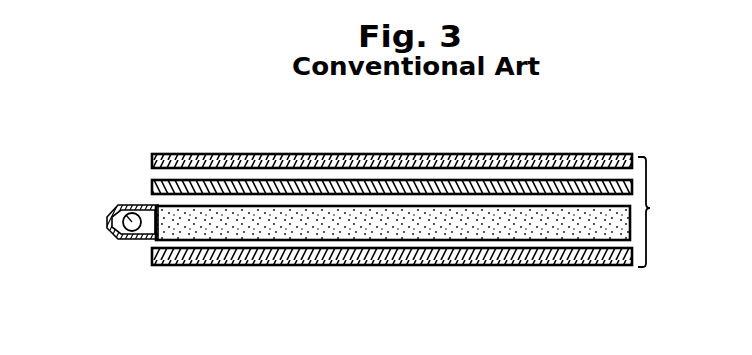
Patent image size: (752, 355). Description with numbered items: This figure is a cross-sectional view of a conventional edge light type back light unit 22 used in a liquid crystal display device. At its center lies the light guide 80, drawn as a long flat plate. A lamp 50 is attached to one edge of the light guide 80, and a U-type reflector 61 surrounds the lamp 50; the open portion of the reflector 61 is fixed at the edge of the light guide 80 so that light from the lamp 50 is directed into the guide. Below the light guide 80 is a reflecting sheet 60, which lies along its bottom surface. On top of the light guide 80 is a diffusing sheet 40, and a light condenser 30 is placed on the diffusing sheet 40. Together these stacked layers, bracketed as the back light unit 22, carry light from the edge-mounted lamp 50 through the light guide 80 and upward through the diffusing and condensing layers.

The edge light type back light unit 22 is at (674, 212).
The light condenser 30 is at (327, 155).
The diffusing sheet 40 is at (527, 181).
The lamp 50 is at (108, 222).
The reflecting sheet 60 is at (300, 256).
The U-type reflector 61 is at (130, 240).
The light guide 80 is at (543, 244).